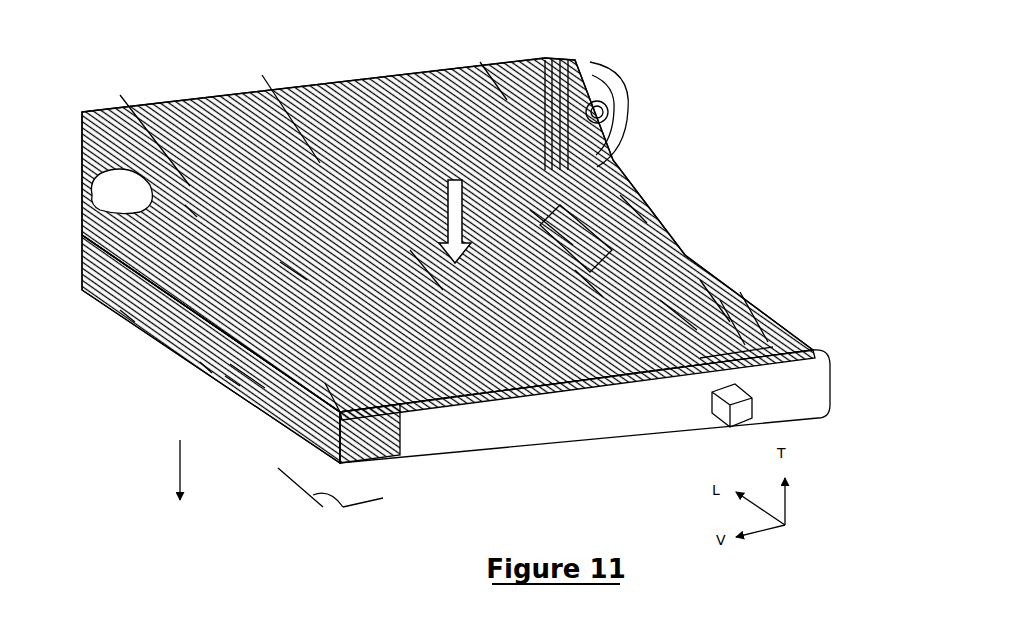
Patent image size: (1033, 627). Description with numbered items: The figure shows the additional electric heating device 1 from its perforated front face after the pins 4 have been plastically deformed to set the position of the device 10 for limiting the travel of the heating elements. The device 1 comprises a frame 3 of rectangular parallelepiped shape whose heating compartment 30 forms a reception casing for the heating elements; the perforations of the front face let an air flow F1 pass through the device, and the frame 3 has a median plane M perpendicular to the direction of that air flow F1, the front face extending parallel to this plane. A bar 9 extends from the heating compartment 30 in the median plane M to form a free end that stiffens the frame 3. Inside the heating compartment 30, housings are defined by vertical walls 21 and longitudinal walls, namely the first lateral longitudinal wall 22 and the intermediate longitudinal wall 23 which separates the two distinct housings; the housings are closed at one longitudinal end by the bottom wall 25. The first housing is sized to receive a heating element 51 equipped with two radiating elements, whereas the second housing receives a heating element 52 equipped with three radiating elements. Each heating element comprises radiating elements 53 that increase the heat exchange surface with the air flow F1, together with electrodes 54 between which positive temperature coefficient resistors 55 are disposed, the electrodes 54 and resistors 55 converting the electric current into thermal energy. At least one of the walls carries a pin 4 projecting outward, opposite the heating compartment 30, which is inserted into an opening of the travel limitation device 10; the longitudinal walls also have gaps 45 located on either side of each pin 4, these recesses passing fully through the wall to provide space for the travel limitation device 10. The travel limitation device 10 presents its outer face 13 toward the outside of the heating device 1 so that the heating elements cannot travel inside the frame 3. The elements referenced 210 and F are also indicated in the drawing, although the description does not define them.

The additional electric heating device 1 is at (775, 212).
The frame 3 is at (647, 223).
The pin 4 is at (190, 186).
The bar 9 is at (773, 347).
The device for limiting the travel of the heating elements 10 is at (500, 157).
The outer face 13 is at (697, 330).
The vertical wall 21 is at (240, 386).
The first lateral longitudinal wall 22 is at (245, 247).
The intermediate longitudinal wall 23 is at (443, 290).
The bottom wall 25 is at (785, 405).
The heating compartment 30 is at (612, 250).
The gap 45 is at (197, 217).
The heating element 51 is at (307, 280).
The heating element 52 is at (573, 245).
The radiating element 53 is at (212, 373).
The electrode 54 is at (603, 297).
The positive temperature coefficient resistor 55 is at (135, 322).
The corner of side wall 210 is at (325, 383).
The air flow F1 is at (448, 180).
The force direction F is at (178, 462).
The median plane M is at (315, 503).